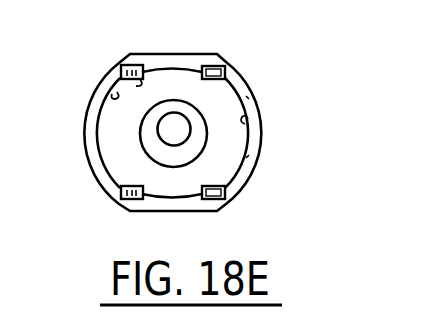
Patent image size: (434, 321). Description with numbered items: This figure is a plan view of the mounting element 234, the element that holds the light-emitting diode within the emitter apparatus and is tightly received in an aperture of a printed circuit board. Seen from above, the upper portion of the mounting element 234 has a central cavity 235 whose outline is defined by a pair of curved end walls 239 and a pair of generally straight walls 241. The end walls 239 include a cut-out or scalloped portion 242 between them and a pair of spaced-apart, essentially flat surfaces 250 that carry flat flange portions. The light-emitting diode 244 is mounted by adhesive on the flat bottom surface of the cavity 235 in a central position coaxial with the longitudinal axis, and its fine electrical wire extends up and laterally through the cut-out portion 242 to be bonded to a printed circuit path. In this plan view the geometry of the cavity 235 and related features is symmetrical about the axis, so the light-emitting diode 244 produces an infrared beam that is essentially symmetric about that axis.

The mounting element 234 is at (72, 146).
The central cavity 235 is at (124, 150).
The curved end walls 239 is at (117, 92).
The generally straight walls 241 is at (150, 66).
The cut-out or scalloped portion 242 is at (178, 195).
The light-emitting diode 244 is at (178, 126).
The flat surfaces 250 is at (173, 62).